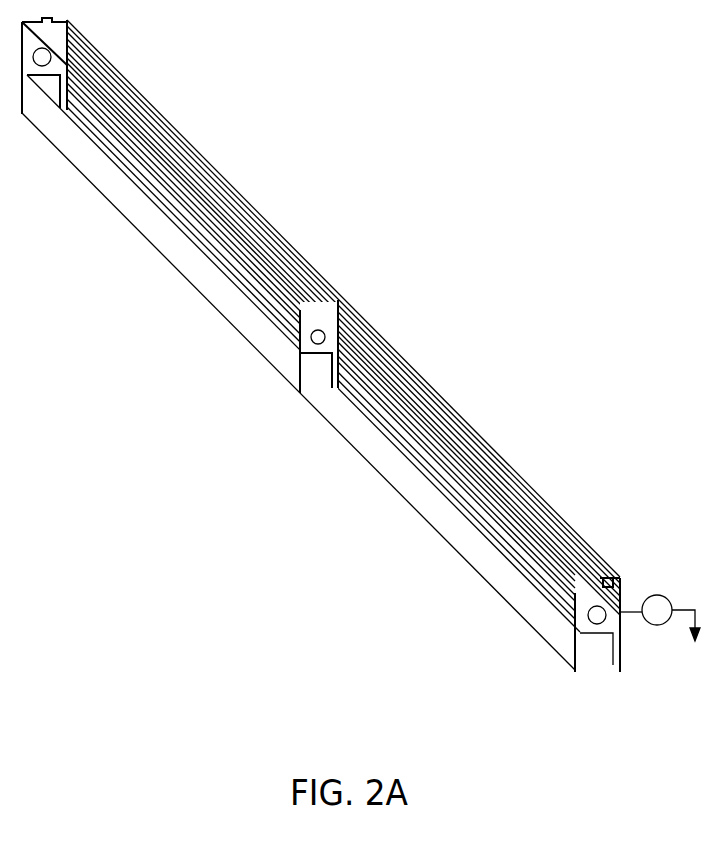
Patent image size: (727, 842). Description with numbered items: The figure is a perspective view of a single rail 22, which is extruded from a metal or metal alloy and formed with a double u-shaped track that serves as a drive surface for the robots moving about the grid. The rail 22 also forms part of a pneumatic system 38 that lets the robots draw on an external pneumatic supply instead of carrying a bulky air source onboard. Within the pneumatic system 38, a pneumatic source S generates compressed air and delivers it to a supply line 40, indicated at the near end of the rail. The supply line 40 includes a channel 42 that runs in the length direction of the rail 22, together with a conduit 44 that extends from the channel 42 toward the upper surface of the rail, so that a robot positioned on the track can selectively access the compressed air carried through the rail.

The rail 22 is at (361, 370).
The pneumatic system 38 is at (615, 650).
The supply line 40 is at (584, 634).
The channel 42 is at (450, 470).
The conduit 44 is at (316, 310).